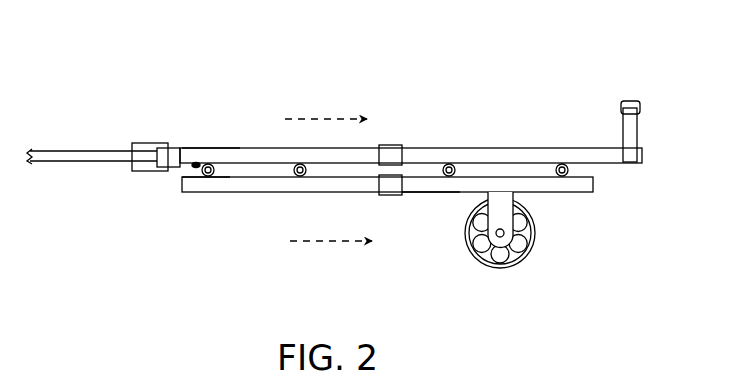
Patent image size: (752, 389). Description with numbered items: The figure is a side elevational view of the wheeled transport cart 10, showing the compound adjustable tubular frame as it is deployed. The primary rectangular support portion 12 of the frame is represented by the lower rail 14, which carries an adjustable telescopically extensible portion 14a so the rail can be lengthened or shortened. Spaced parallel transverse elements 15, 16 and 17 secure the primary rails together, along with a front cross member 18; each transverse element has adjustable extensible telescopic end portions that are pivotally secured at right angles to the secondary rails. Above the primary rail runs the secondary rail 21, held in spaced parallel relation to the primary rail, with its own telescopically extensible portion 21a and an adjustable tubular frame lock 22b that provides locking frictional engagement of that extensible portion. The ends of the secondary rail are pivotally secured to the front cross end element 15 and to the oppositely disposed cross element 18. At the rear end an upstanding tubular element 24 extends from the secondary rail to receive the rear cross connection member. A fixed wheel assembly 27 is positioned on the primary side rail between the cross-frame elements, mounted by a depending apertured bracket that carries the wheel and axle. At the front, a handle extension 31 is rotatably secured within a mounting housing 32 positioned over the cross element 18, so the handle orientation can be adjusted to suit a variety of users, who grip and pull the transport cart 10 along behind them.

The wheeled transport cart 10 is at (530, 48).
The primary rectangular support portion 12 is at (260, 192).
The rail 14 is at (453, 187).
The telescopically extensible portion 14a is at (217, 187).
The transverse element 15 is at (567, 170).
The transverse element 16 is at (448, 165).
The transverse element 17 is at (312, 173).
The front cross member 18 is at (193, 167).
The secondary rail 21 is at (505, 147).
The telescopically extensible portion 21a is at (242, 148).
The adjustable tubular frame lock 22b is at (390, 145).
The upstanding tubular element 24 is at (638, 125).
The fixed wheel assembly 27 is at (537, 230).
The handle extension 31 is at (82, 150).
The mounting housing 32 is at (148, 143).